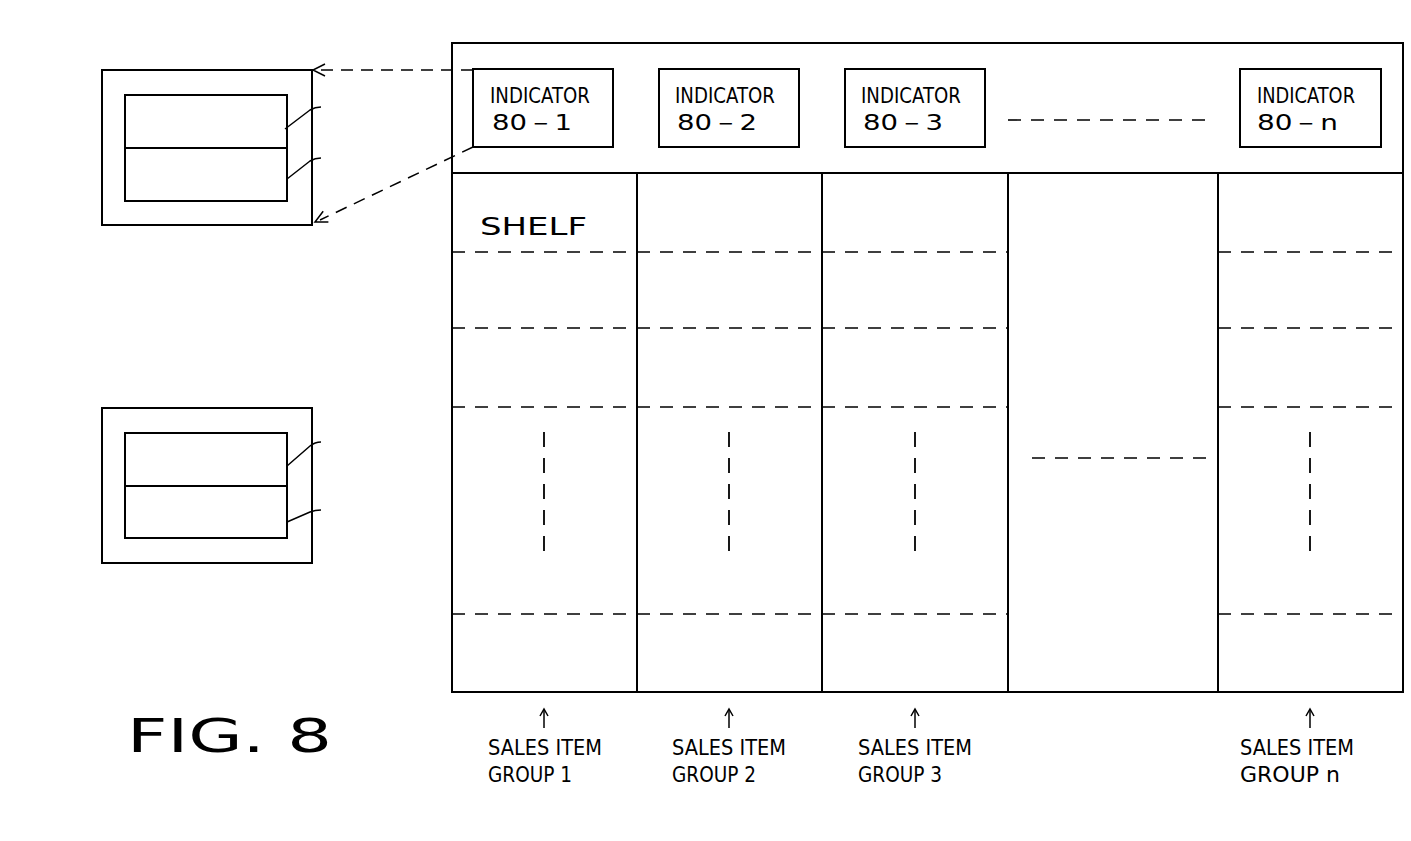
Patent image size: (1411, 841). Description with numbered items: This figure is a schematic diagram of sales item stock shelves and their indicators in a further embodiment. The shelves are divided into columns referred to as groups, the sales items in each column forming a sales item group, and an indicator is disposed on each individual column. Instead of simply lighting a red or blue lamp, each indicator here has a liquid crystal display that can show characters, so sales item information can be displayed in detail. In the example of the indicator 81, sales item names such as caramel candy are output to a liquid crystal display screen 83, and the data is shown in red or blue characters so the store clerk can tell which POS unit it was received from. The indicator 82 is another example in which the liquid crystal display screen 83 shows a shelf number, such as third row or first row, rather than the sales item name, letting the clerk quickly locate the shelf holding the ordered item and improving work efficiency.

The indicator 81 is at (193, 69).
The indicator 82 is at (193, 405).
The liquid crystal display screen 83 is at (236, 200).